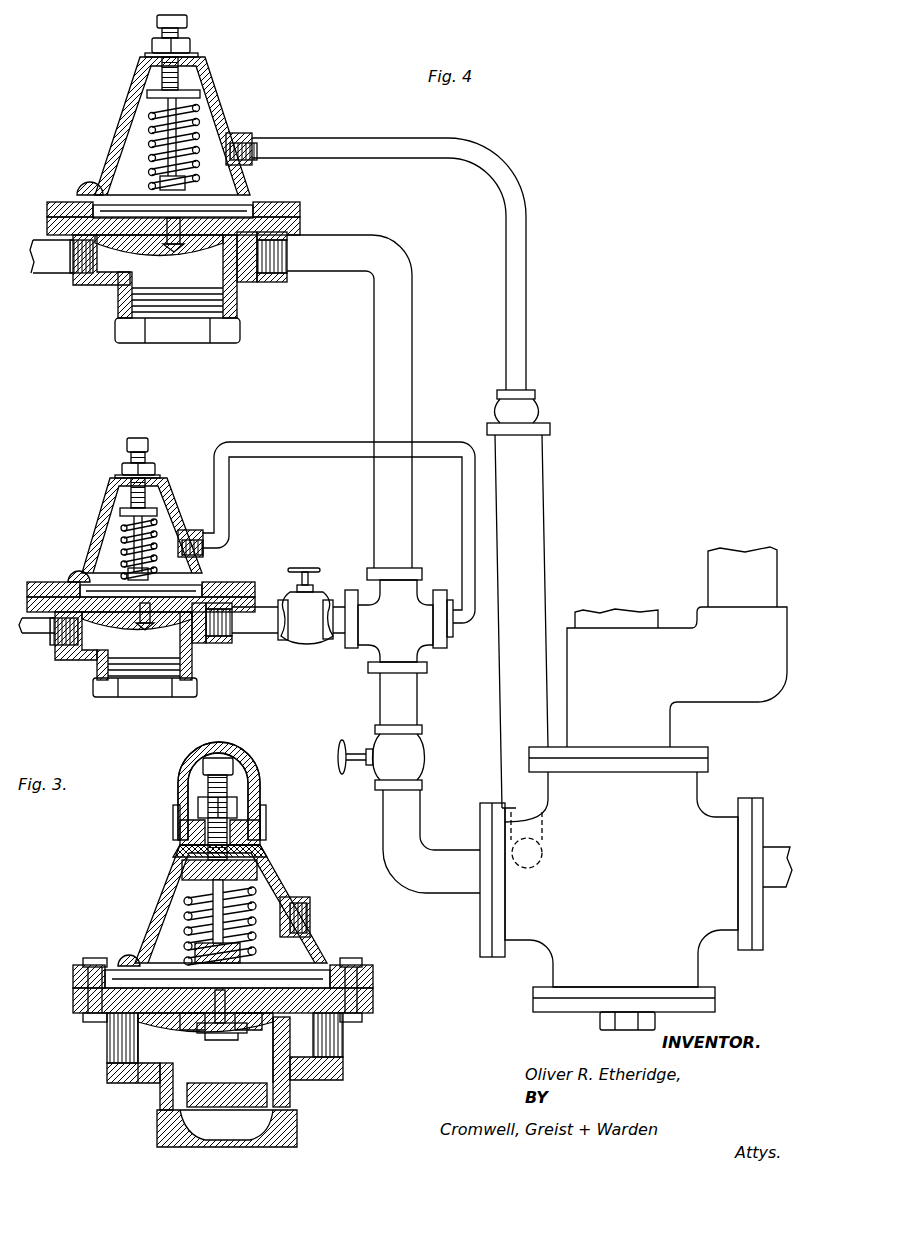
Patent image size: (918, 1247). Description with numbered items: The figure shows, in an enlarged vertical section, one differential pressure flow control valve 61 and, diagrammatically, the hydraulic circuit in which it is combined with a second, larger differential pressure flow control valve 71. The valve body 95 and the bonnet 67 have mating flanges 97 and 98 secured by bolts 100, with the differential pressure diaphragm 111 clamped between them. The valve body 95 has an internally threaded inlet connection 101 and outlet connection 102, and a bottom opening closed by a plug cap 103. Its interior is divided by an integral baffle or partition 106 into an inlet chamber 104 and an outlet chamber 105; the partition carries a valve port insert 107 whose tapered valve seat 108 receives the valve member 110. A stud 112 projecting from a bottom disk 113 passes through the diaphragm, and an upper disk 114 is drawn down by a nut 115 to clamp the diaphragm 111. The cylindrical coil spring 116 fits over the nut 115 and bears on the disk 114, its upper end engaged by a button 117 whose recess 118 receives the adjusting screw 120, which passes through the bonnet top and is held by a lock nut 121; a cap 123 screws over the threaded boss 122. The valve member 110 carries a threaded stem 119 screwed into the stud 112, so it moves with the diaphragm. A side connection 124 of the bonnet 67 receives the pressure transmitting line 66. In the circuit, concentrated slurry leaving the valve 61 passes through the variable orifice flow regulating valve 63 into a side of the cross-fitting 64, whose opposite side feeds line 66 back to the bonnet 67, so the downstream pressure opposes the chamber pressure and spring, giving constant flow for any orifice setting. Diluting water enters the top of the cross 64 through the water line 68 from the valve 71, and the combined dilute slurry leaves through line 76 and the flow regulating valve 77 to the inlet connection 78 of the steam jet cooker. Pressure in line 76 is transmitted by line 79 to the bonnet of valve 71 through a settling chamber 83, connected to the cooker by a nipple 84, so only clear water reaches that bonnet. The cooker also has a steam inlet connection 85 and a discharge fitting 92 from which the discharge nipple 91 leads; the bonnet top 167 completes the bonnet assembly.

In FIG. 4, the differential pressure flow control valve 61 is at (148, 567).
In FIG. 3, the differential pressure flow control valve 61 is at (228, 836).
In FIG. 4, the variable orifice flow regulating valve 63 is at (300, 642).
In FIG. 4, the cross-fitting 64 is at (418, 593).
In FIG. 4, the pressure transmitting line 66 is at (322, 443).
In FIG. 3, the bonnet 67 is at (183, 852).
In FIG. 4, the water line 68 is at (373, 507).
In FIG. 4, the second differential pressure flow control valve 71 is at (128, 106).
In FIG. 4, the dilute starch slurry line 76 is at (418, 690).
In FIG. 4, the variable orifice flow regulating valve 77 is at (413, 758).
In FIG. 4, the inlet connection 78 is at (486, 917).
In FIG. 4, the pressure transmitting line 79 is at (526, 324).
In FIG. 4, the settling chamber 83 is at (545, 535).
In FIG. 4, the nipple 84 is at (543, 854).
In FIG. 4, the second inlet connection 85 is at (780, 888).
In FIG. 4, the discharge nipple 91 is at (720, 565).
In FIG. 4, the discharge fitting 92 is at (751, 697).
In FIG. 3, the valve body 95 is at (160, 1092).
In FIG. 3, the flange 97 is at (73, 998).
In FIG. 3, the flange 98 is at (83, 962).
In FIG. 3, the bolts 100 is at (362, 1016).
In FIG. 3, the inlet connection 101 is at (107, 1090).
In FIG. 3, the outlet connection 102 is at (343, 1076).
In FIG. 3, the plug cap 103 is at (297, 1122).
In FIG. 3, the inlet chamber 104 is at (233, 1090).
In FIG. 3, the outlet chamber 105 is at (300, 1016).
In FIG. 3, the baffle or partition 106 is at (310, 1034).
In FIG. 3, the valve port insert 107 is at (183, 1020).
In FIG. 3, the tapered valve seat 108 is at (200, 1030).
In FIG. 4, the valve member 110 is at (147, 632).
In FIG. 3, the valve member 110 is at (213, 1036).
In FIG. 3, the differential pressure diaphragm 111 is at (310, 985).
In FIG. 3, the stud 112 is at (200, 895).
In FIG. 3, the bottom washer or disk 113 is at (157, 982).
In FIG. 3, the upper washer or disk 114 is at (150, 968).
In FIG. 3, the nut 115 is at (270, 938).
In FIG. 3, the cylindrical coil spring 116 is at (252, 880).
In FIG. 3, the button 117 is at (258, 838).
In FIG. 3, the recess 118 is at (266, 818).
In FIG. 3, the threaded stem 119 is at (200, 950).
In FIG. 3, the adjusting screw 120 is at (208, 778).
In FIG. 3, the lock nut 121 is at (238, 797).
In FIG. 3, the exteriorly threaded boss 122 is at (192, 822).
In FIG. 3, the cap 123 is at (215, 742).
In FIG. 3, the connection 124 is at (306, 896).
In FIG. 3, the bonnet top 167 is at (268, 850).